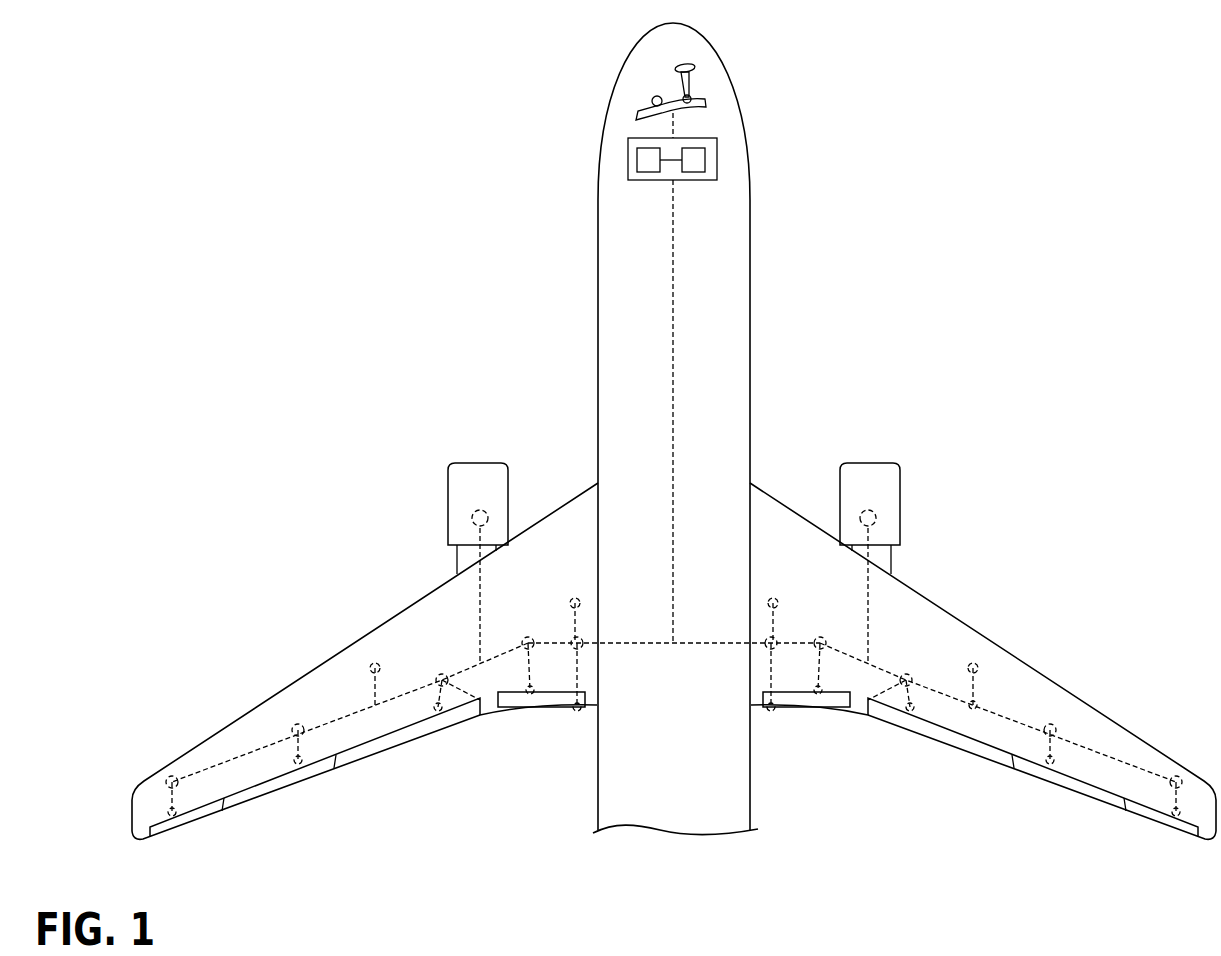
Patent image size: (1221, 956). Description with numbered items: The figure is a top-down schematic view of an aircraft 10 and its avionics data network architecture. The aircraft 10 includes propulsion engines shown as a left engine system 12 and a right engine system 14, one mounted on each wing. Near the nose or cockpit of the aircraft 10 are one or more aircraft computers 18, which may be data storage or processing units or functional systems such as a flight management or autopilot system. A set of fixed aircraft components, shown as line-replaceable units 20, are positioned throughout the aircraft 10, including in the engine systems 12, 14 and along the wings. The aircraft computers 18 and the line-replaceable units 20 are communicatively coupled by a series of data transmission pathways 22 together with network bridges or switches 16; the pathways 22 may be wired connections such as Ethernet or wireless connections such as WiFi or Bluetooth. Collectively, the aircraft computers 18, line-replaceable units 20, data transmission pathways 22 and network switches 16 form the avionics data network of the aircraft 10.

The aircraft 10 is at (477, 56).
The left engine system 12 is at (482, 470).
The right engine system 14 is at (880, 478).
The network bridges or switches 16 is at (174, 788).
The aircraft computers 18 is at (648, 171).
The line-replaceable units 20 is at (497, 511).
The data transmission pathways 22 is at (673, 355).